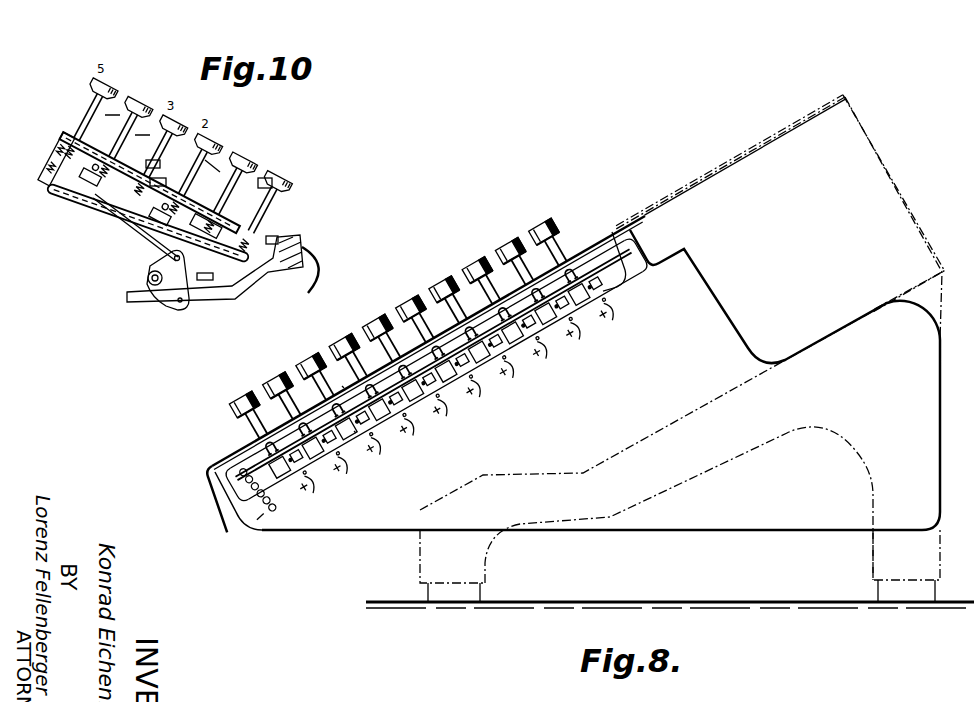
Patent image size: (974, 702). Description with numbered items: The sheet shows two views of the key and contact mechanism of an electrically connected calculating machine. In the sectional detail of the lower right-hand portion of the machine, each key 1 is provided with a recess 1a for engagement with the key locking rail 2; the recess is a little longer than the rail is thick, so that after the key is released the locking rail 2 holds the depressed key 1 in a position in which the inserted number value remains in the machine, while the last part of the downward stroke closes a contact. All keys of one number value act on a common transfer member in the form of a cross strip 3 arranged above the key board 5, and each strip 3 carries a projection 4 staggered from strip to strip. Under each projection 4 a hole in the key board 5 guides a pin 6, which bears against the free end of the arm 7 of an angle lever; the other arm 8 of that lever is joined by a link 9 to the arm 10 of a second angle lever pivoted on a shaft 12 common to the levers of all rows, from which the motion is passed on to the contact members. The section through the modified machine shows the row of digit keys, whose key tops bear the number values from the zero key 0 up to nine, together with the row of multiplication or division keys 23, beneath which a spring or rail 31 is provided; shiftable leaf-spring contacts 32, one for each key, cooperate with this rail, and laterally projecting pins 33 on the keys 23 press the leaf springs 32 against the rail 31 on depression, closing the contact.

In FIG. 10, the key 1 is at (212, 160).
In FIG. 8, the key 1 is at (302, 416).
In FIG. 10, the recess 1a is at (108, 125).
In FIG. 10, the key locking rail 2 is at (272, 241).
In FIG. 8, the key locking rail 2 is at (335, 397).
In FIG. 10, the cross strip 3 is at (257, 188).
In FIG. 8, the cross strip 3 is at (368, 378).
In FIG. 10, the projection 4 is at (124, 129).
In FIG. 8, the projection 4 is at (402, 359).
In FIG. 10, the key board 5 is at (302, 254).
In FIG. 8, the key board 5 is at (237, 458).
In FIG. 10, the pin 6 is at (157, 180).
In FIG. 8, the pin 6 is at (468, 320).
In FIG. 10, the arm of angle lever 7 is at (151, 168).
In FIG. 8, the arm of angle lever 7 is at (501, 301).
In FIG. 10, the arm of angle lever 8 is at (106, 200).
In FIG. 8, the arm of angle lever 8 is at (535, 282).
In FIG. 10, the link 9 is at (140, 233).
In FIG. 8, the link 9 is at (568, 263).
In FIG. 10, the arm of second angle lever 10 is at (181, 277).
In FIG. 10, the shaft 12 is at (148, 279).
In FIG. 8, the multiplication or division keys 23 is at (362, 276).
In FIG. 8, the spring 31 is at (355, 432).
In FIG. 8, the shiftable contacts 32 is at (343, 387).
In FIG. 8, the laterally projecting pins 33 is at (257, 438).
In FIG. 8, the key 0 is at (269, 435).